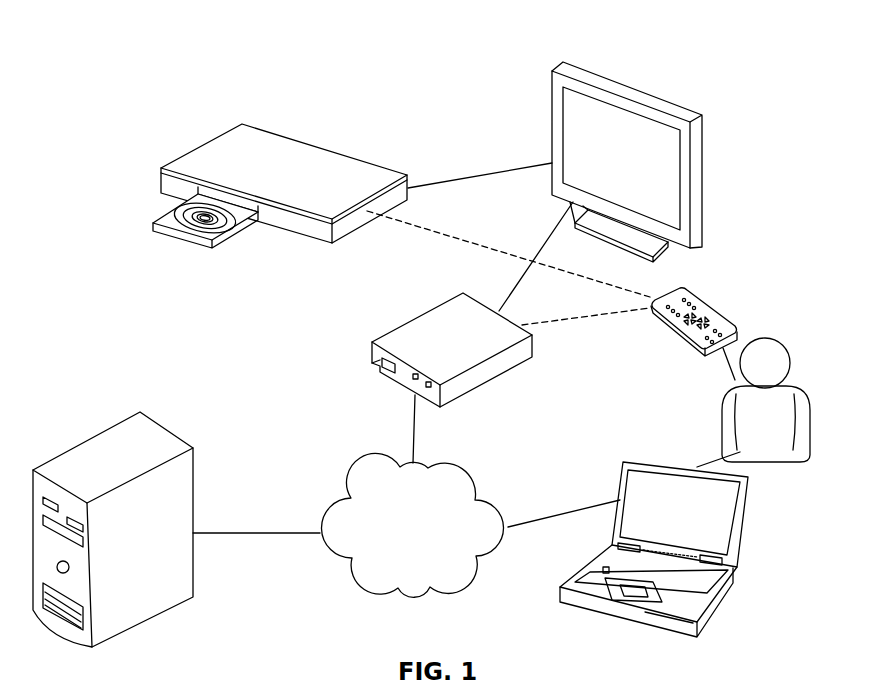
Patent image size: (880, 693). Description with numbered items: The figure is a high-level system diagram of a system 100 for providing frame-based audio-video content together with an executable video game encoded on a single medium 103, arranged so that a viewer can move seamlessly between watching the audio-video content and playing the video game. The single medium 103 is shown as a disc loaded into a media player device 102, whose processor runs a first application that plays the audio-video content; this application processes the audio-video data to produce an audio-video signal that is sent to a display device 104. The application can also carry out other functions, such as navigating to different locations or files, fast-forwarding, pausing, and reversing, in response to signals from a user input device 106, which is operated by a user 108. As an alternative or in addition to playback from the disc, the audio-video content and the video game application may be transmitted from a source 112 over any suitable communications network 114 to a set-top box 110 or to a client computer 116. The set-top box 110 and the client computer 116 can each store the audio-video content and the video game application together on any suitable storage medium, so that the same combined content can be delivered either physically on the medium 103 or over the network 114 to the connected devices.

The system 100 is at (132, 74).
The media player device 102 is at (295, 147).
The single medium 103 is at (177, 213).
The display device 104 is at (697, 184).
The user input device 106 is at (698, 302).
The user 108 is at (770, 337).
The set-top box 110 is at (408, 333).
The source 112 is at (163, 435).
The communications network 114 is at (431, 538).
The client computer 116 is at (638, 462).